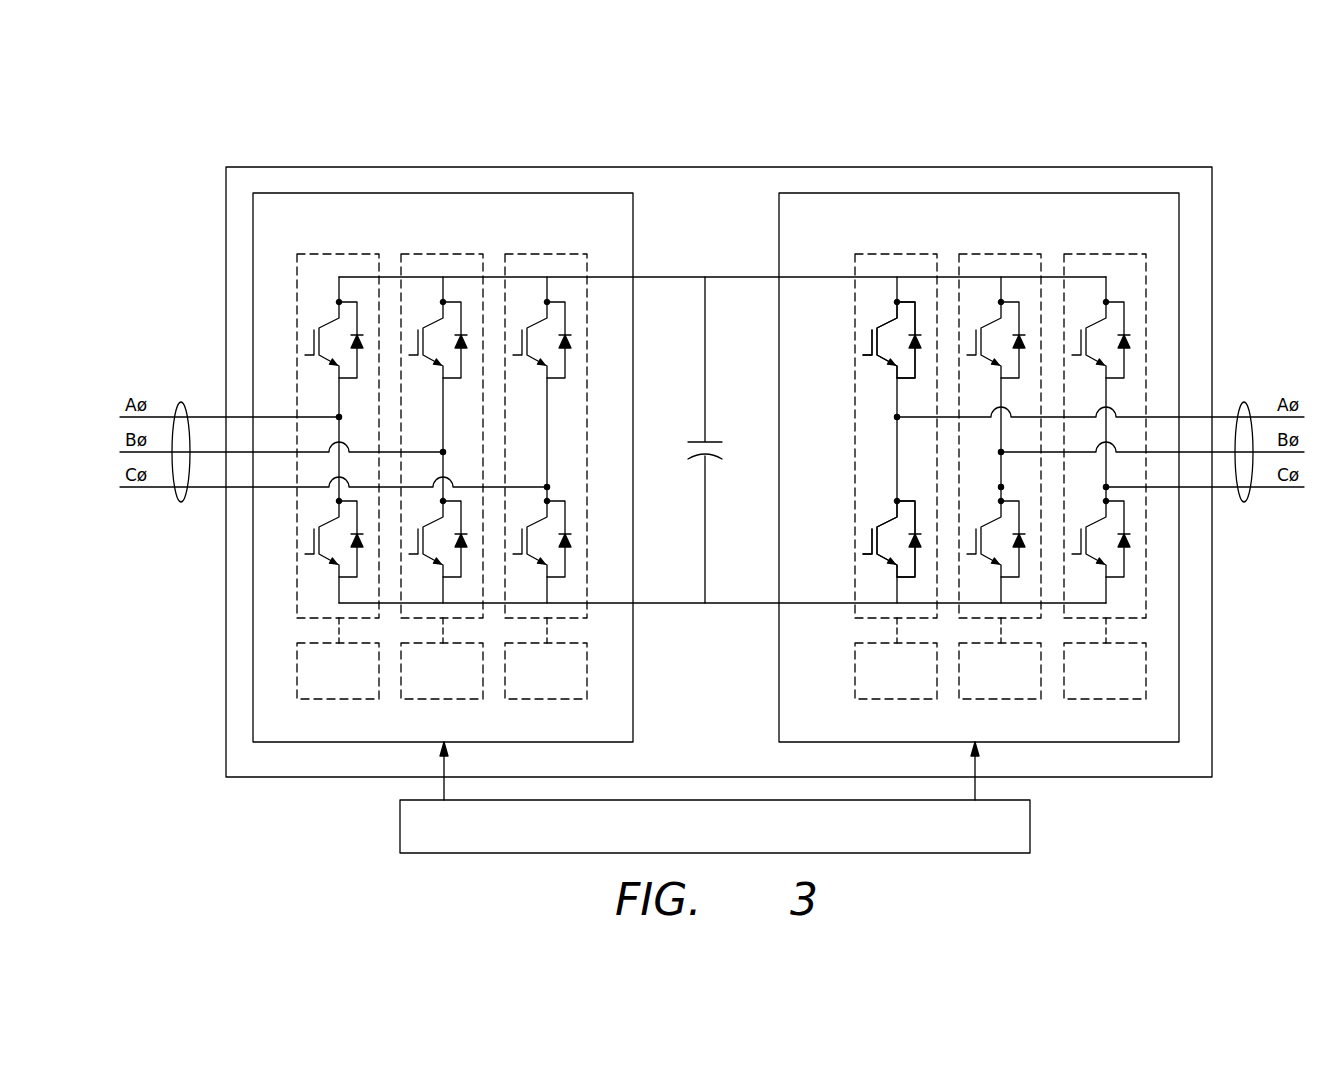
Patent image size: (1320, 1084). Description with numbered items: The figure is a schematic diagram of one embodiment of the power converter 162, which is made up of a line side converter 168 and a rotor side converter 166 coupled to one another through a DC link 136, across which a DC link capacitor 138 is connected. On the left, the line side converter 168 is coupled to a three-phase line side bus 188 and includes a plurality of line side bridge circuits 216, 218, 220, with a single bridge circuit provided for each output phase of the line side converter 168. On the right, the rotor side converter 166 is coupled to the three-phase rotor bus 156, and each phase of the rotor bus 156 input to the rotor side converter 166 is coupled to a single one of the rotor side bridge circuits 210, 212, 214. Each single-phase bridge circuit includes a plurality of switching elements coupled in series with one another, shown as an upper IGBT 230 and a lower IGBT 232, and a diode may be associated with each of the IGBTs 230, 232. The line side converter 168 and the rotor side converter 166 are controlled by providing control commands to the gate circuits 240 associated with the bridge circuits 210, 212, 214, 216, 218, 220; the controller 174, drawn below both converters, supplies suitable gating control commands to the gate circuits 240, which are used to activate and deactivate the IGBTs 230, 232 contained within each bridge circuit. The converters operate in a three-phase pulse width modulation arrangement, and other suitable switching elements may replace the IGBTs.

The DC link 136 is at (667, 277).
The DC link capacitor 138 is at (706, 441).
The rotor bus 156 is at (1245, 402).
The power converter 162 is at (804, 167).
The rotor side converter 166 is at (1020, 193).
The line side converter 168 is at (448, 193).
The controller 174 is at (1030, 838).
The line side bus 188 is at (182, 402).
The rotor side bridge circuit 210 is at (885, 254).
The rotor side bridge circuit 212 is at (989, 254).
The rotor side bridge circuit 214 is at (1094, 254).
The line side bridge circuit 216 is at (327, 254).
The line side bridge circuit 218 is at (431, 254).
The line side bridge circuit 220 is at (535, 254).
The upper IGBT 230 is at (868, 340).
The lower IGBT 232 is at (868, 540).
The gate circuit 240 is at (318, 686).